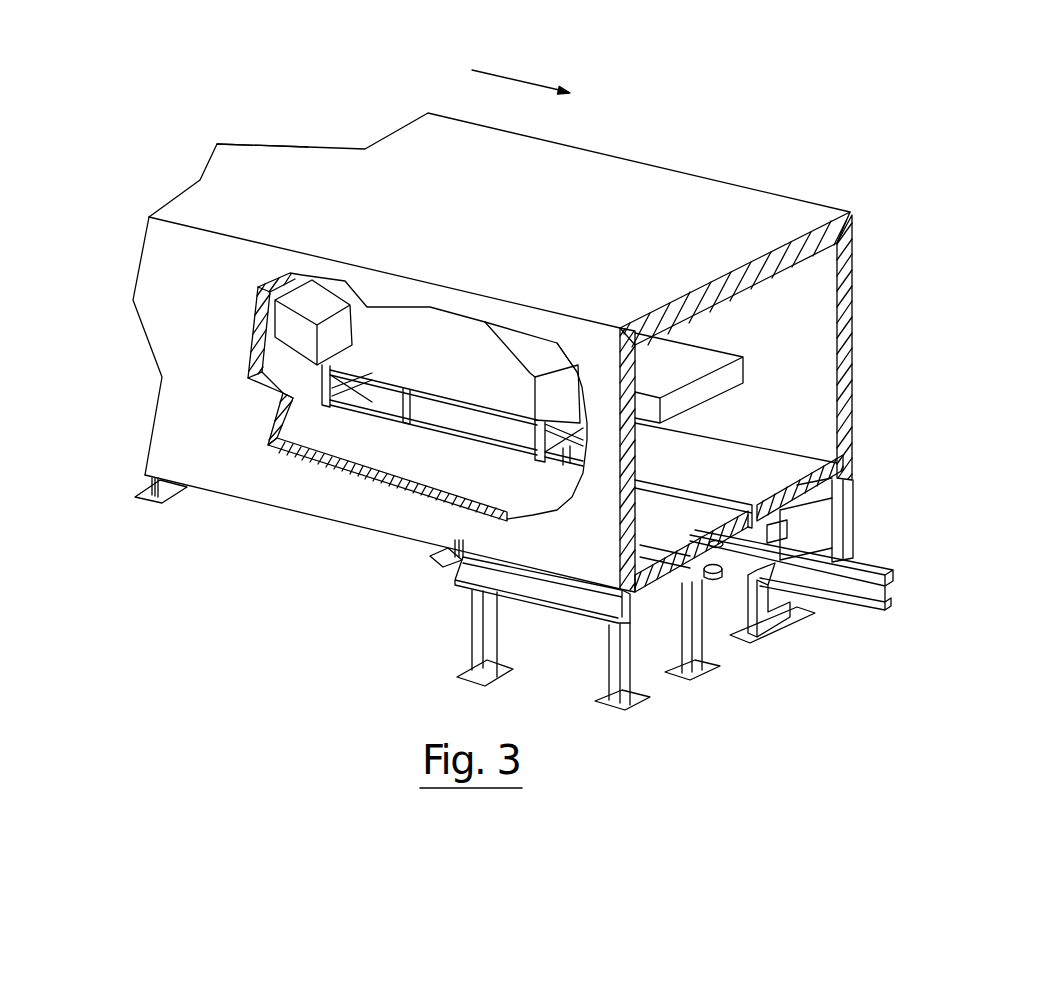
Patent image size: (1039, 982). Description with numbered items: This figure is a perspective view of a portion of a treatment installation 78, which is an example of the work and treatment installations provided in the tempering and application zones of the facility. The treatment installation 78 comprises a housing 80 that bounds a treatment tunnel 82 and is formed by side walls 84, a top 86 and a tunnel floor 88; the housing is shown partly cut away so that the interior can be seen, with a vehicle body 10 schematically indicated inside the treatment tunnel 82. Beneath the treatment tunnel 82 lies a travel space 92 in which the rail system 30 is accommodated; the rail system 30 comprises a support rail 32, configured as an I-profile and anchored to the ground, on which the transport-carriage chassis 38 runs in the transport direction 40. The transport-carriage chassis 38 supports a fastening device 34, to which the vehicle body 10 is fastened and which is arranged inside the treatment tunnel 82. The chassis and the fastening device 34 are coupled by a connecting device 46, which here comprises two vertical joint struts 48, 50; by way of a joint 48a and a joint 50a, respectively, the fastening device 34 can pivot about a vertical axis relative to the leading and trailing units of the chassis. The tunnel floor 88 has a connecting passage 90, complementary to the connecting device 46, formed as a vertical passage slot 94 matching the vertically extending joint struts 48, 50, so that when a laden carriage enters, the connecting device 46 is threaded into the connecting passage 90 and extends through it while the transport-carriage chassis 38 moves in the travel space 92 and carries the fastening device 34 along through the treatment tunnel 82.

The vehicle body 10 is at (706, 345).
The rail system 30 is at (852, 627).
The support rail 32 is at (858, 590).
The fastening device 34 is at (306, 376).
The transport-carriage chassis 38 is at (720, 592).
The transport direction 40 is at (538, 82).
The connecting device 46 is at (428, 412).
The joint strut 48 is at (414, 412).
The joint 48a is at (402, 424).
The joint strut 50 is at (547, 458).
The joint 50a is at (557, 394).
The treatment installation 78 is at (623, 132).
The housing 80 is at (697, 212).
The treatment tunnel 82 is at (799, 405).
The side walls 84 is at (853, 328).
The top 86 is at (308, 172).
The tunnel floor 88 is at (670, 540).
The connecting passage 90 is at (715, 518).
The travel space 92 is at (812, 535).
The vertical passage slot 94 is at (690, 500).